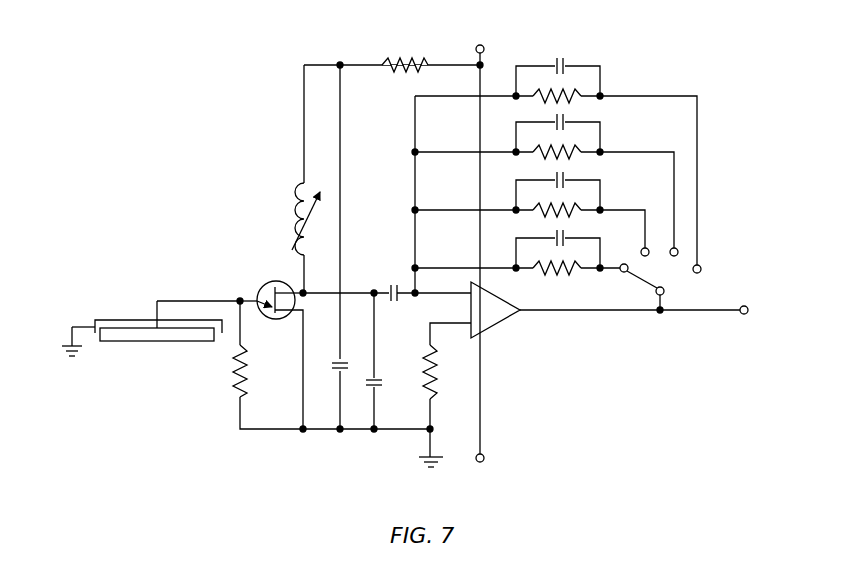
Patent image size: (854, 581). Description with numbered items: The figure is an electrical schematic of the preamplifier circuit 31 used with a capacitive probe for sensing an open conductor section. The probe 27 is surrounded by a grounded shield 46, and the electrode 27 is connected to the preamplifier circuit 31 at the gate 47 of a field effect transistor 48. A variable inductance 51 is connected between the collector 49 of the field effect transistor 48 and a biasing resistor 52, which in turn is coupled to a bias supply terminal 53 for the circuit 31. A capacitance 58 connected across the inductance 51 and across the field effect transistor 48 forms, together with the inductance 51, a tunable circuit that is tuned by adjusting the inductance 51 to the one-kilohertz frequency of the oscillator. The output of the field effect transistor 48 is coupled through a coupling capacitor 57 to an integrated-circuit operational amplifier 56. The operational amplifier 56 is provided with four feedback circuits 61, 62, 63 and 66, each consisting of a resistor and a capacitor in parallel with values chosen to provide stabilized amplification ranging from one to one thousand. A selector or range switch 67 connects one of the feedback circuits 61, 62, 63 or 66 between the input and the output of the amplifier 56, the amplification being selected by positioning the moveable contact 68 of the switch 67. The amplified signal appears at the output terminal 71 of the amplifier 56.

The probe 27 is at (176, 342).
The preamplifier circuit 31 is at (328, 38).
The shield 46 is at (118, 318).
The gate 47 is at (258, 297).
The field effect transistor 48 is at (276, 321).
The collector 49 is at (301, 287).
The variable inductance 51 is at (298, 205).
The biasing resistor 52 is at (392, 61).
The bias supply terminal 53 is at (486, 50).
The operational amplifier 56 is at (500, 301).
The coupling capacitor 57 is at (398, 300).
The capacitance 58 is at (337, 372).
The feedback circuit 61 is at (562, 280).
The feedback circuit 62 is at (609, 193).
The feedback circuit 63 is at (614, 141).
The feedback circuit 66 is at (607, 86).
The range switch 67 is at (689, 287).
The moveable contact 68 is at (636, 275).
The output terminal 71 is at (690, 312).